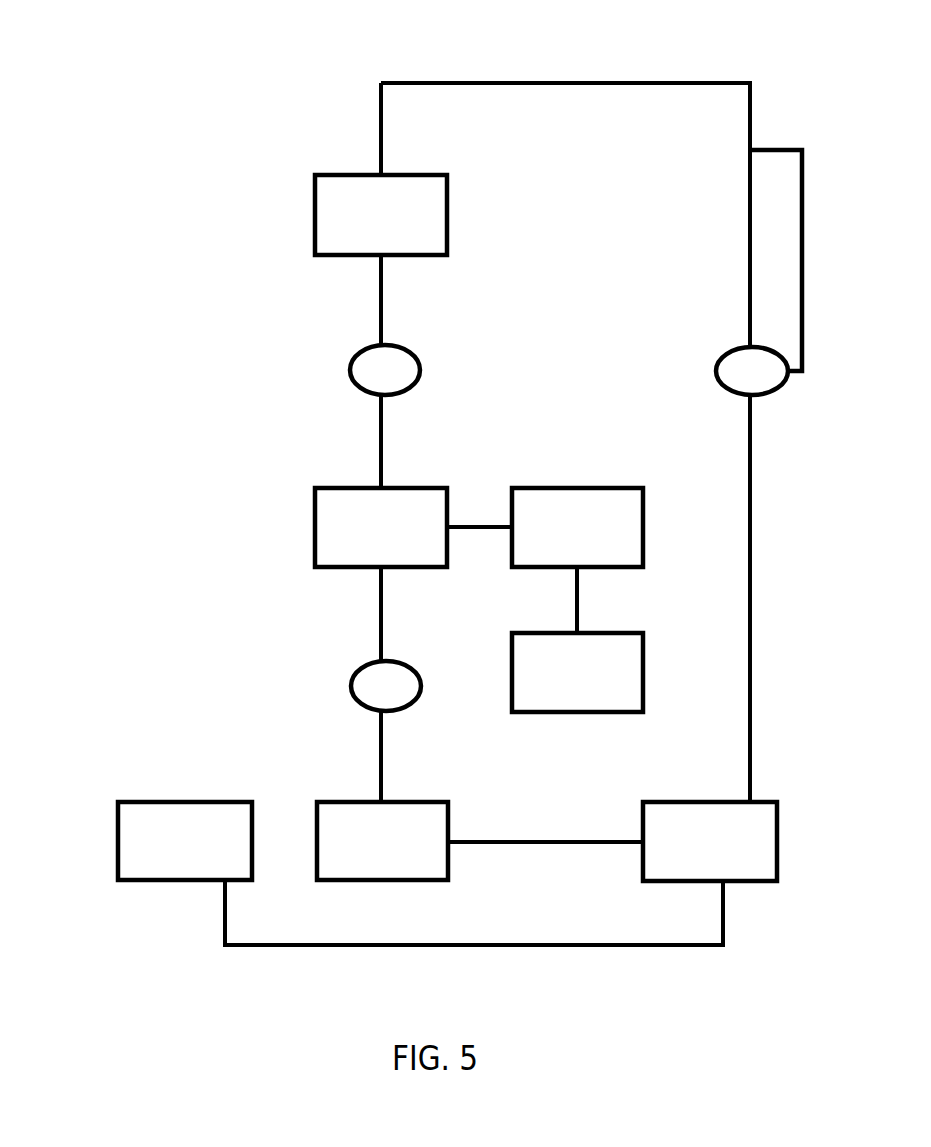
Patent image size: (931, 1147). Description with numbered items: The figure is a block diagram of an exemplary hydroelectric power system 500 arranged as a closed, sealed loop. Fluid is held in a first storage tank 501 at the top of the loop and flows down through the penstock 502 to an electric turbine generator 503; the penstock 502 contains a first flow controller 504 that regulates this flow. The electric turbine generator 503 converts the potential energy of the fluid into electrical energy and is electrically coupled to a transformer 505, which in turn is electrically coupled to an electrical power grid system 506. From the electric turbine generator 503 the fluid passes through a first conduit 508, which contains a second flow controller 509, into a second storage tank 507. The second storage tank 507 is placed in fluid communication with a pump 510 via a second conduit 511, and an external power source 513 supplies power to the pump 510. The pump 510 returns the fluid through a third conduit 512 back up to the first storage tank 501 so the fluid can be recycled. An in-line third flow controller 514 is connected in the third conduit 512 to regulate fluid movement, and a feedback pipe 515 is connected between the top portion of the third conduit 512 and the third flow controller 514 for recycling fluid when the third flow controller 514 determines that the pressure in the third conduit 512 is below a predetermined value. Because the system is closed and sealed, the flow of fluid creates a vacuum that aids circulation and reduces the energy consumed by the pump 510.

The hydroelectric power system 500 is at (168, 97).
The first storage tank 501 is at (315, 230).
The penstock 502 is at (381, 308).
The electric turbine generator 503 is at (315, 527).
The first flow controller 504 is at (421, 370).
The transformer 505 is at (643, 527).
The electrical power grid system 506 is at (643, 672).
The second storage tank 507 is at (448, 873).
The first conduit 508 is at (381, 620).
The second flow controller 509 is at (421, 686).
The pump 510 is at (697, 800).
The second conduit 511 is at (592, 842).
The third conduit 512 is at (748, 295).
The external power source 513 is at (172, 880).
The third flow controller 514 is at (765, 398).
The feedback pipe 515 is at (762, 147).